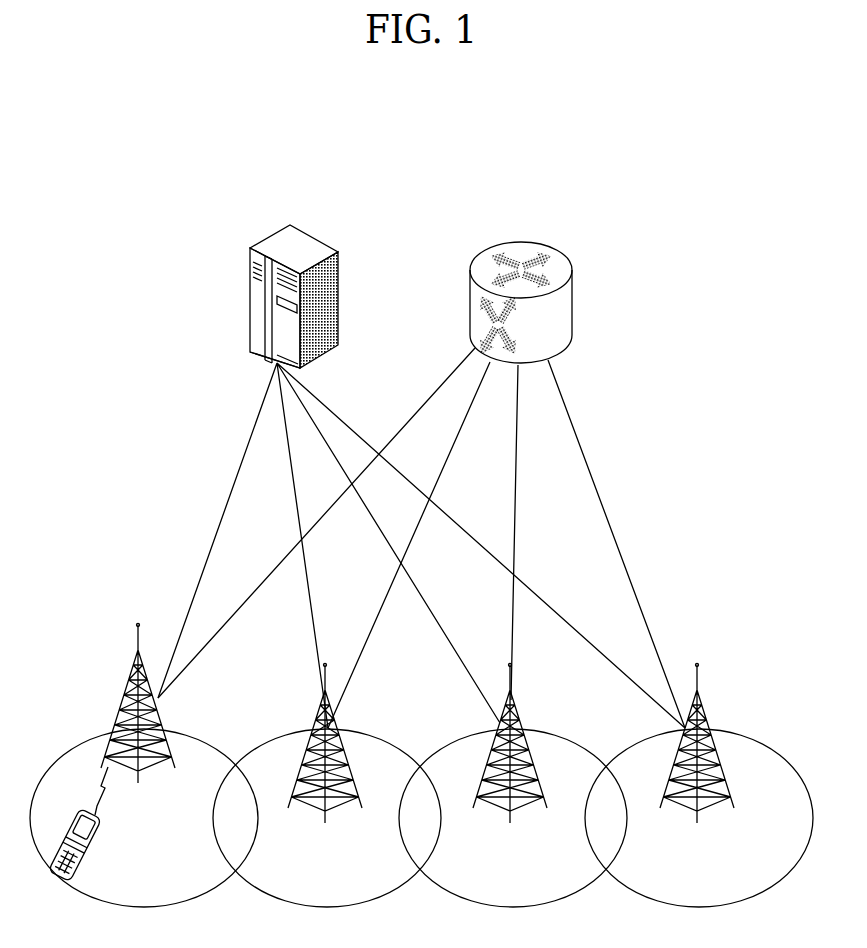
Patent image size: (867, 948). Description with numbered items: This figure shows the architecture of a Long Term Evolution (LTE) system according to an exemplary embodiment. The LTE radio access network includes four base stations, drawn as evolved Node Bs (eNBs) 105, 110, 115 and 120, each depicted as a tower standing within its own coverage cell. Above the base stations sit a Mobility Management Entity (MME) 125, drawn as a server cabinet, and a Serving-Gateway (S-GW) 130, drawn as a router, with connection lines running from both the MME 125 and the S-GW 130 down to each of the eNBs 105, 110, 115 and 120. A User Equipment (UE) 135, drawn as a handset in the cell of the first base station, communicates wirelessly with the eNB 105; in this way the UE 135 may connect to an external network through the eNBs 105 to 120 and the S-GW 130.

The evolved Node B 105 is at (130, 682).
The evolved Node B 110 is at (318, 708).
The evolved Node B 115 is at (517, 712).
The evolved Node B 120 is at (705, 708).
The Mobility Management Entity 125 is at (280, 245).
The Serving-Gateway 130 is at (517, 250).
The User Equipment 135 is at (95, 840).